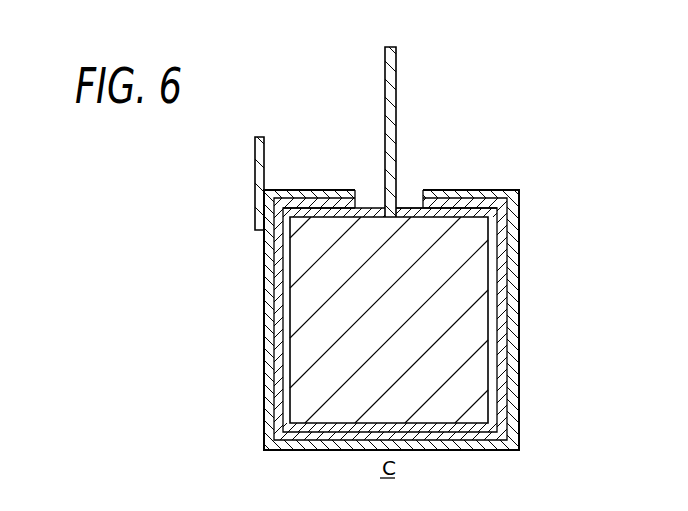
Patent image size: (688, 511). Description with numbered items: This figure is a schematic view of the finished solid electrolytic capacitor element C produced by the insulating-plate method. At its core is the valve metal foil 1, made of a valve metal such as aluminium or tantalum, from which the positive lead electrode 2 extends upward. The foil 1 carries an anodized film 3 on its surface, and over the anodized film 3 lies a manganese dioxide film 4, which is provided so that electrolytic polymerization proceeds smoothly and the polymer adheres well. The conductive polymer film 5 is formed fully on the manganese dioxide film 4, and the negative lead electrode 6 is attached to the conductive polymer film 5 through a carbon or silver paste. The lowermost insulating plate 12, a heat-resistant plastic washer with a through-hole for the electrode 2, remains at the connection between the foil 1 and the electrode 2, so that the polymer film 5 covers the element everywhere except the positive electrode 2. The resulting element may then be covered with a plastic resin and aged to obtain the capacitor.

The valve metal foil 1 is at (470, 385).
The positive lead electrode 2 is at (390, 133).
The anodized film 3 is at (492, 368).
The manganese dioxide film 4 is at (503, 323).
The conductive polymer film 5 is at (512, 288).
The negative lead electrode 6 is at (255, 177).
The insulating plate 12 is at (412, 208).